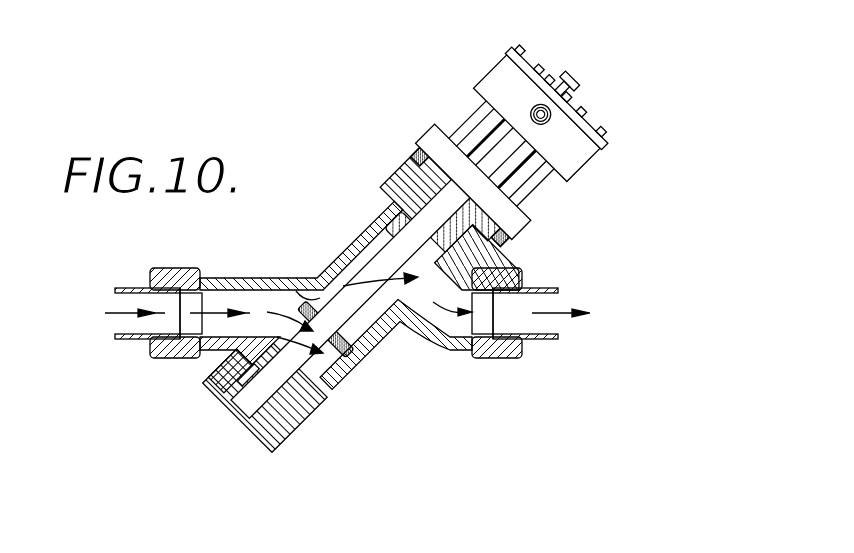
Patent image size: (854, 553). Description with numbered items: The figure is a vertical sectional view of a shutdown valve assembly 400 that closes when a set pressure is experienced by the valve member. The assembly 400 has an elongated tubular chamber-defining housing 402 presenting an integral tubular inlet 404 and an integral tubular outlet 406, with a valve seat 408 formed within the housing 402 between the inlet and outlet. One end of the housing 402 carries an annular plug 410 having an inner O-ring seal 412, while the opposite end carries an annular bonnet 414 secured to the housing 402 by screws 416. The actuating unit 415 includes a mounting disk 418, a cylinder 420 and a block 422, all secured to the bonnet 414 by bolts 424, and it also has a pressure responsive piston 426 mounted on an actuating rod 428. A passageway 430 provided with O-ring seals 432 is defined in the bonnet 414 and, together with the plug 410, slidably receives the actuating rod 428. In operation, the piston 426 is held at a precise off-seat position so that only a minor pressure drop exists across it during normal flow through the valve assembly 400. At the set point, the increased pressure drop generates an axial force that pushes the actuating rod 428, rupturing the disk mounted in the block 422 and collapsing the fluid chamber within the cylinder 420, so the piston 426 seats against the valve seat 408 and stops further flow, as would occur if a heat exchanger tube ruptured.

The shutdown valve assembly 400 is at (537, 227).
The housing 402 is at (346, 262).
The inlet 404 is at (218, 277).
The outlet 406 is at (463, 342).
The valve seat 408 is at (302, 289).
The plug 410 is at (242, 362).
The O-ring seal 412 is at (328, 396).
The bonnet 414 is at (408, 160).
The actuating unit 415 is at (612, 115).
The screws 416 is at (418, 150).
The mounting disk 418 is at (434, 142).
The cylinder 420 is at (508, 147).
The block 422 is at (506, 70).
The bolts 424 is at (522, 60).
The piston 426 is at (360, 346).
The actuating rod 428 is at (256, 402).
The passageway 430 is at (410, 232).
The O-ring seals 432 is at (400, 210).